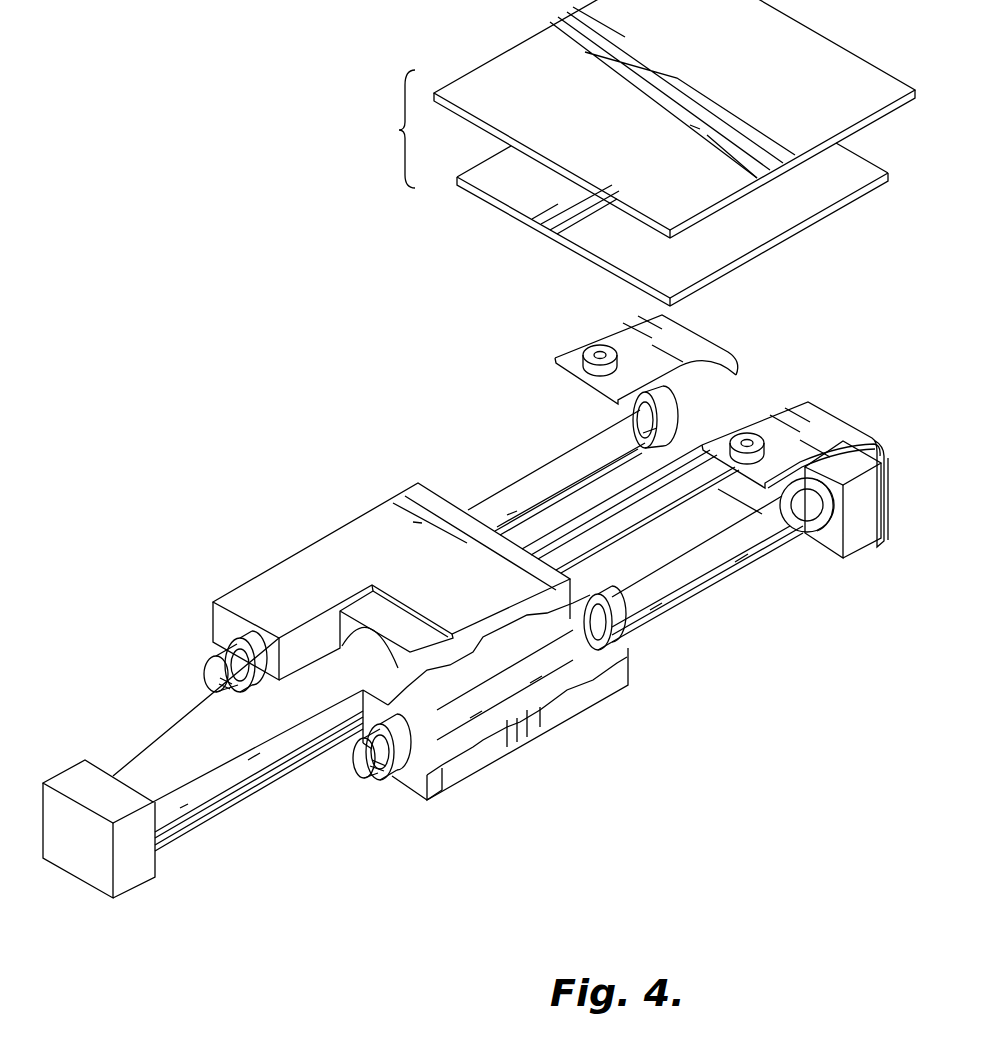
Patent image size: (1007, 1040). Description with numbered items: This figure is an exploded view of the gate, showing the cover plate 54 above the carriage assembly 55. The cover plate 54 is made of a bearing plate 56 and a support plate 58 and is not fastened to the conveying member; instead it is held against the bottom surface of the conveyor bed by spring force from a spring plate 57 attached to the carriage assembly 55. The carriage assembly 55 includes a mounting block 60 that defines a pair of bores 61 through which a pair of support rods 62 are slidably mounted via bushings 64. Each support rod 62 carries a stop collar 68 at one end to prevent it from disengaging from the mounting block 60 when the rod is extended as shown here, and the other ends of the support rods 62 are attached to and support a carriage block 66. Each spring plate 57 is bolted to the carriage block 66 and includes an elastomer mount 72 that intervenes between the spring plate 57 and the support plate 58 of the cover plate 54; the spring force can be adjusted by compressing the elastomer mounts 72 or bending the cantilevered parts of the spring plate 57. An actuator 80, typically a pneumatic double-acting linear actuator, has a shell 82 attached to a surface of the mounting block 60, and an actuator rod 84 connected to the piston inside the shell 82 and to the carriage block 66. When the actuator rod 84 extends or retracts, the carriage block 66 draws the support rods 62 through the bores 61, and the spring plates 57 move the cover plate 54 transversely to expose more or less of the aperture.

The cover plate 54 is at (390, 129).
The carriage assembly 55 is at (313, 338).
The bearing plate 56 is at (482, 76).
The spring plate 57 is at (560, 372).
The support plate 58 is at (500, 208).
The mounting block 60 is at (557, 735).
The bores 61 is at (612, 704).
The support rods 62 is at (530, 477).
The bushings 64 is at (620, 627).
The carriage block 66 is at (858, 552).
The stop collar 68 is at (215, 636).
The elastomer mount 72 is at (590, 340).
The actuator 80 is at (209, 838).
The shell 82 is at (187, 730).
The actuator rod 84 is at (633, 542).